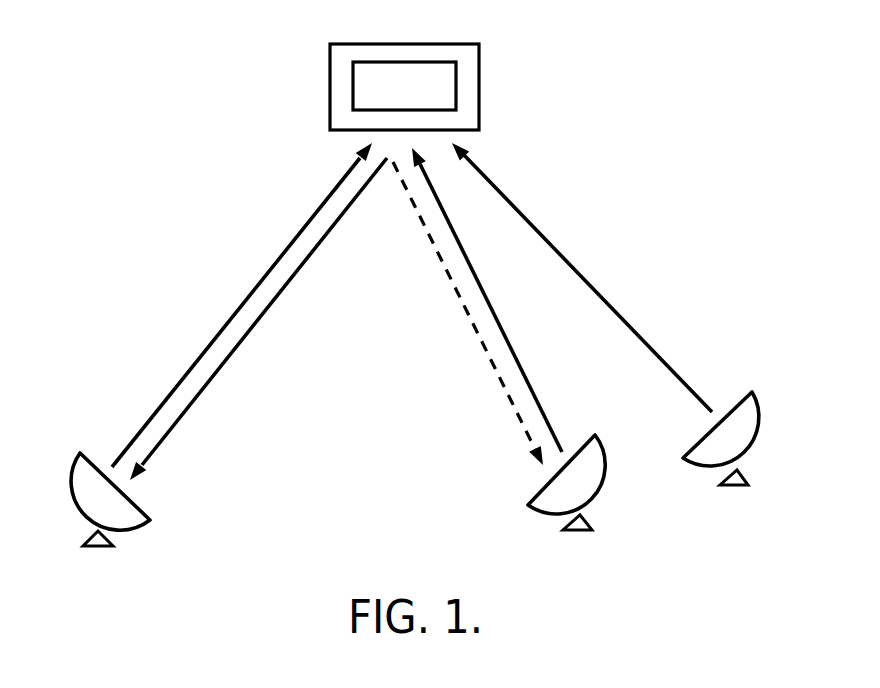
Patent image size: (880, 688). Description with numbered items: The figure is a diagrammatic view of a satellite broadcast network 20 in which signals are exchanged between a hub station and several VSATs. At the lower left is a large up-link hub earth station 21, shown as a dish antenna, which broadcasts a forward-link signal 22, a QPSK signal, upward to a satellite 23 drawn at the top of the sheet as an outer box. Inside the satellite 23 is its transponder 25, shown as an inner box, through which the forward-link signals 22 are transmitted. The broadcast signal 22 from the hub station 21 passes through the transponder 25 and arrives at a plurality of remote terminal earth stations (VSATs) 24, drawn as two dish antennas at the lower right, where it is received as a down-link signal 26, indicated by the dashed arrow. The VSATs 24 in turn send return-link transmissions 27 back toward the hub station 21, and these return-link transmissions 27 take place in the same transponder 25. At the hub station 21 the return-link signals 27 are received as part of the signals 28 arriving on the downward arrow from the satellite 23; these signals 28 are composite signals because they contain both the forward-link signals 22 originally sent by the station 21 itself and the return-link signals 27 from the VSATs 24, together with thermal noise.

The satellite broadcast network 20 is at (229, 46).
The up-link hub earth station 21 is at (140, 530).
The forward-link signal 22 is at (252, 290).
The satellite 23 is at (470, 92).
The remote terminal earth stations (VSATs) 24 is at (600, 497).
The transponder 25 is at (398, 78).
The down-link signal 26 is at (450, 272).
The return-link transmissions 27 is at (503, 330).
The composite signals 28 is at (240, 347).